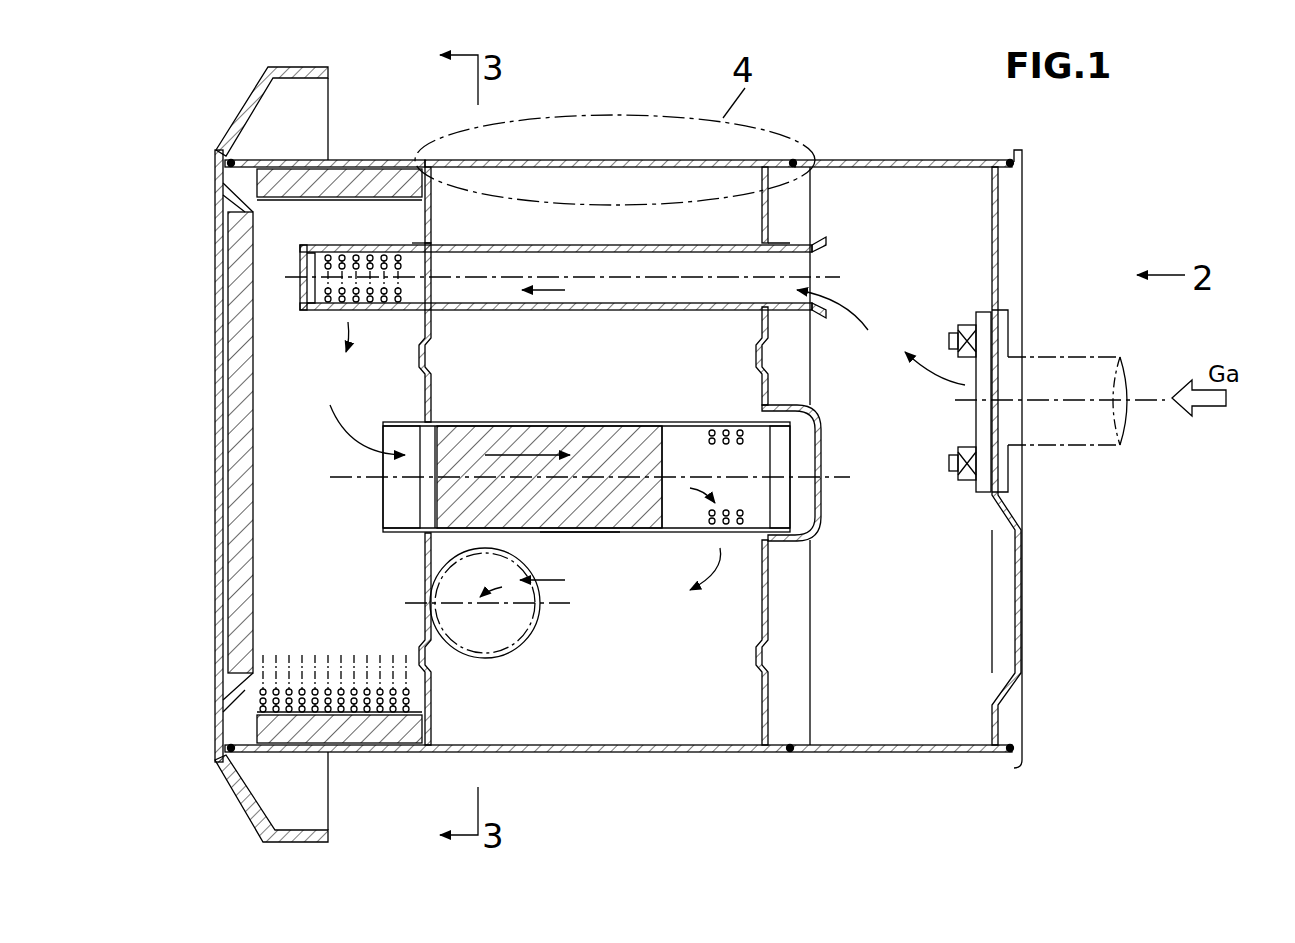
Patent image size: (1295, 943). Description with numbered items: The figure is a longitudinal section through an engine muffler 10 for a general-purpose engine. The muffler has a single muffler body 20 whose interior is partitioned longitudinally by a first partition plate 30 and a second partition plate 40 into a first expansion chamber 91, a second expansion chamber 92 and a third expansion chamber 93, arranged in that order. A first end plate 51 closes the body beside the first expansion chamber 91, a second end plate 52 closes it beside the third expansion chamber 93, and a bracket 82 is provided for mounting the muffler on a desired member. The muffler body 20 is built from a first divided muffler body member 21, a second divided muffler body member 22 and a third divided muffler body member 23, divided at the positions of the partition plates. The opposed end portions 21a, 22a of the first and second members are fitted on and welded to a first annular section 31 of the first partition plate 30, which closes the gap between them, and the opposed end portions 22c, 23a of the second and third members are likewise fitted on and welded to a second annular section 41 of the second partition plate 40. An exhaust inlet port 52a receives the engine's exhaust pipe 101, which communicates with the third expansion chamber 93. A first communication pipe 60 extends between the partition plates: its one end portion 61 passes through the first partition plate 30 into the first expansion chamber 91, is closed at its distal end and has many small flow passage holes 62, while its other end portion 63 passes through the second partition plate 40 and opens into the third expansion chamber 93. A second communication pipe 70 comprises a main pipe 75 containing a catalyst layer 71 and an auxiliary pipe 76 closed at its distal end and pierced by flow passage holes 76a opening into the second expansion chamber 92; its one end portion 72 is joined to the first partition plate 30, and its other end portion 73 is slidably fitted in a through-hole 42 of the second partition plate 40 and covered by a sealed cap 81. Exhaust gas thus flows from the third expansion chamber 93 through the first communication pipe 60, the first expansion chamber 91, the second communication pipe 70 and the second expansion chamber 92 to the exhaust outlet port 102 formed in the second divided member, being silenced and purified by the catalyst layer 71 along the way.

The engine muffler 10 is at (1162, 118).
The muffler body 20 is at (625, 443).
The first divided muffler body member 21 is at (335, 160).
The opposed end portion of first divided muffler body member 21a is at (378, 166).
The second divided muffler body member 22 is at (652, 160).
The opposed end portion of second divided muffler body member 22a is at (412, 165).
The opposed end portion of second divided muffler body member 22c is at (793, 160).
The third divided muffler body member 23 is at (895, 160).
The opposed end portion of third divided muffler body member 23a is at (808, 162).
The first partition plate 30 is at (432, 378).
The first annular section 31 is at (395, 190).
The second partition plate 40 is at (840, 456).
The second annular section 41 is at (798, 180).
The through-hole 42 is at (760, 425).
The first end plate 51 is at (215, 192).
The second end plate 52 is at (1000, 224).
The exhaust inlet port 52a is at (985, 382).
The first communication pipe 60 is at (580, 313).
The one end portion of first communication pipe 61 is at (310, 312).
The flow passage holes 62 is at (347, 306).
The other end portion of first communication pipe 63 is at (815, 263).
The second communication pipe 70 is at (608, 490).
The catalyst layer 71 is at (570, 423).
The one end portion of second communication pipe 72 is at (440, 423).
The other end portion of second communication pipe 73 is at (798, 450).
The main pipe 75 is at (576, 534).
The auxiliary pipe 76 is at (698, 497).
The flow passage holes 76a is at (712, 432).
The cap 81 is at (825, 472).
The bracket 82 is at (288, 70).
The first expansion chamber 91 is at (312, 600).
The second expansion chamber 92 is at (624, 655).
The third expansion chamber 93 is at (898, 655).
The exhaust pipe 101 is at (1115, 357).
The exhaust outlet port 102 is at (500, 655).